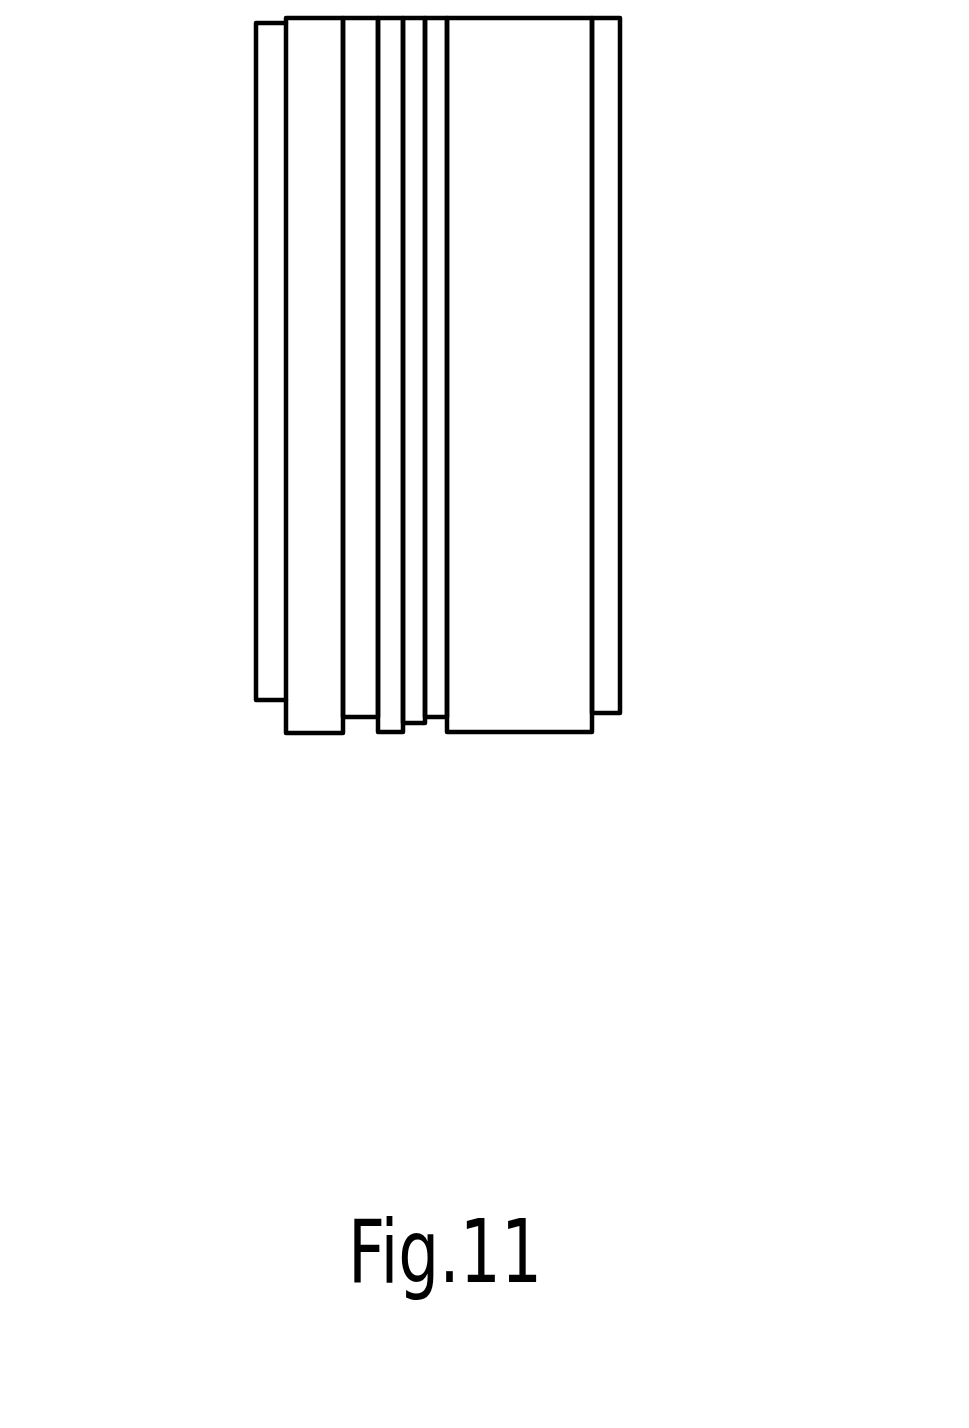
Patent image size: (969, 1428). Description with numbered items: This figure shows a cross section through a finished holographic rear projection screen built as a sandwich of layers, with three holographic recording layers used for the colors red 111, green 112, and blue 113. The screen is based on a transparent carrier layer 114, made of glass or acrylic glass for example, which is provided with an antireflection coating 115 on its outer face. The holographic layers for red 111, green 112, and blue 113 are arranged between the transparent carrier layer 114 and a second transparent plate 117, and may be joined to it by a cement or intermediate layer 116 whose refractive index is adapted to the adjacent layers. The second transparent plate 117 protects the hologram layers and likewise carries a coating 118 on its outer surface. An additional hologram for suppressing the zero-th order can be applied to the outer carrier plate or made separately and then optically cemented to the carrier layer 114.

The recording layer for red 111 is at (369, 525).
The recording layer for green 112 is at (415, 713).
The recording layer for blue 113 is at (445, 710).
The transparent carrier layer 114 is at (545, 708).
The coating (antireflection layer) 115 is at (602, 702).
The cement or intermediate layer 116 is at (360, 697).
The second transparent plate 117 is at (297, 713).
The coating 118 is at (267, 640).